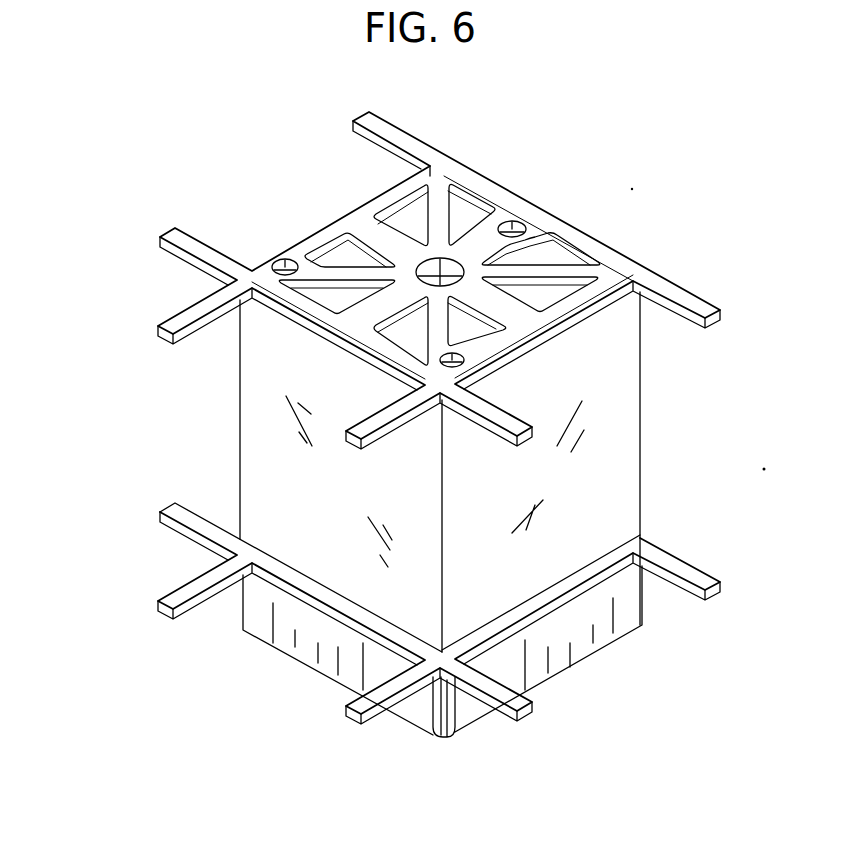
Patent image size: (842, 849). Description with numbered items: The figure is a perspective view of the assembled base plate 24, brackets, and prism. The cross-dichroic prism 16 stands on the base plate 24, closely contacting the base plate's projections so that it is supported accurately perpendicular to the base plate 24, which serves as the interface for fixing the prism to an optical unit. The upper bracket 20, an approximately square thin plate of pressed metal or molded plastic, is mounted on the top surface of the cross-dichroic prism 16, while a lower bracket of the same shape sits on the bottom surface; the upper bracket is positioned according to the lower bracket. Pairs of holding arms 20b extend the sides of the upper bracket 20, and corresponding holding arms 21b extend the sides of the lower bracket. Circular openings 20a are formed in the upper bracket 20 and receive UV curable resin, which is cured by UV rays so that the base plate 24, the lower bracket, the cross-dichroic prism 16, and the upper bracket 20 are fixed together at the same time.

The upper bracket 20 is at (498, 188).
The circular openings 20a is at (402, 206).
The holding arms 20b is at (363, 133).
The cross-dichroic prism 16 is at (262, 433).
The holding arms 21b is at (195, 578).
The base plate 24 is at (303, 643).